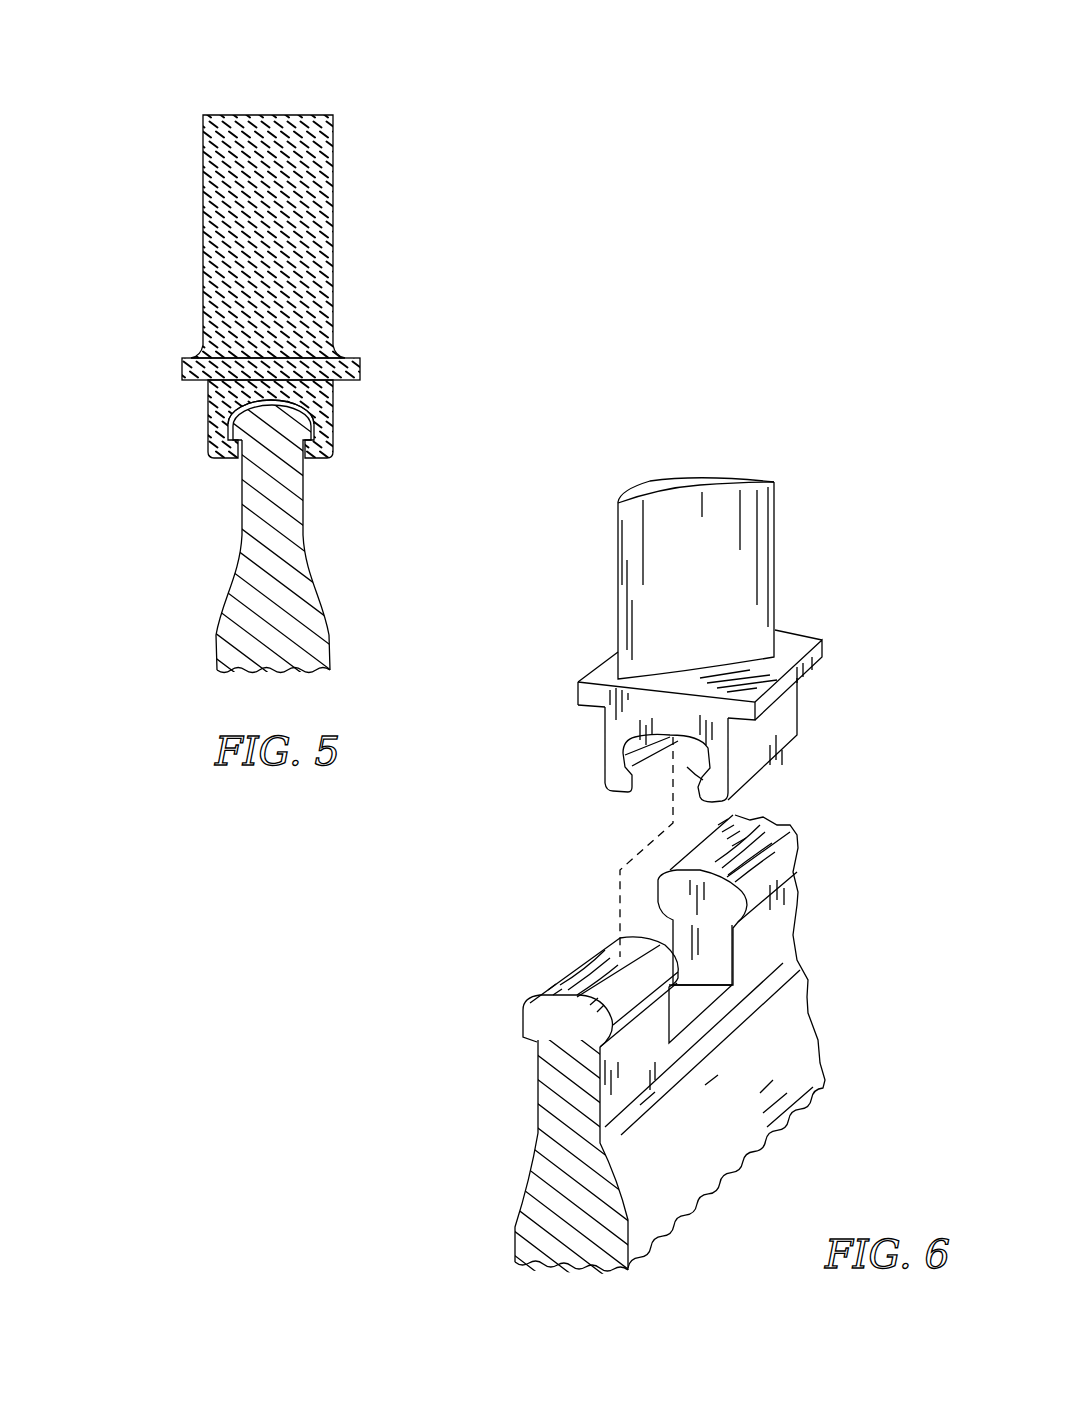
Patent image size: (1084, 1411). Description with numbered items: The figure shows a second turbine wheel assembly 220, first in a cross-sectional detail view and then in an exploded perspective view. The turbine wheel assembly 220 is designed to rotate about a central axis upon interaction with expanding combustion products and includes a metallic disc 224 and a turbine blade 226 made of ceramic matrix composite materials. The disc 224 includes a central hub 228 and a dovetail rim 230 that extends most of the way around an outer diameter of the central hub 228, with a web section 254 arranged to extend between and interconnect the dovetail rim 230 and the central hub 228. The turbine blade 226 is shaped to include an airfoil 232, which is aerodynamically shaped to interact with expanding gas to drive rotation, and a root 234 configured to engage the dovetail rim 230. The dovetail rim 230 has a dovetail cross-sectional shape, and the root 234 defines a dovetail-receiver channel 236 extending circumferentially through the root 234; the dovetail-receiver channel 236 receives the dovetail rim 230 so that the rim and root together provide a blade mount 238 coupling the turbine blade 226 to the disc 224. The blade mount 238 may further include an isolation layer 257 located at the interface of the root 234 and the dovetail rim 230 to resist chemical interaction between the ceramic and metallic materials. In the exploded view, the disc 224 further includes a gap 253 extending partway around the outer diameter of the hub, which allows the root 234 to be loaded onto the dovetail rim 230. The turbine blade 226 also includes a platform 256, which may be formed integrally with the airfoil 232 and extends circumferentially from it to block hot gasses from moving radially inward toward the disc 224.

In FIG. 5, the turbine wheel assembly 220 is at (130, 108).
In FIG. 5, the disc 224 is at (278, 542).
In FIG. 6, the disc 224 is at (671, 1098).
In FIG. 5, the turbine blade 226 is at (339, 294).
In FIG. 6, the turbine blade 226 is at (750, 717).
In FIG. 5, the central hub 228 is at (330, 648).
In FIG. 6, the central hub 228 is at (627, 1223).
In FIG. 5, the dovetail rim 230 is at (312, 396).
In FIG. 6, the dovetail rim 230 is at (670, 990).
In FIG. 5, the airfoil 232 is at (333, 240).
In FIG. 6, the airfoil 232 is at (742, 570).
In FIG. 5, the root 234 is at (333, 436).
In FIG. 6, the root 234 is at (740, 763).
In FIG. 5, the dovetail-receiver channel 236 is at (260, 398).
In FIG. 6, the dovetail-receiver channel 236 is at (705, 800).
In FIG. 5, the blade mount 238 is at (339, 388).
In FIG. 6, the blade mount 238 is at (733, 817).
In FIG. 6, the gap 253 is at (692, 927).
In FIG. 5, the web section 254 is at (303, 510).
In FIG. 6, the web section 254 is at (600, 1087).
In FIG. 5, the platform 256 is at (360, 368).
In FIG. 6, the platform 256 is at (802, 673).
In FIG. 5, the isolation layer 257 is at (307, 443).